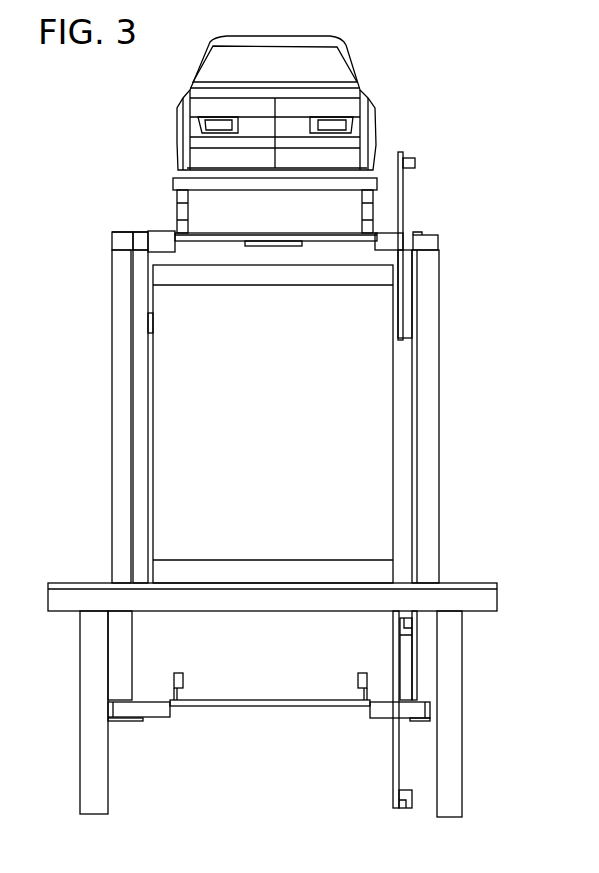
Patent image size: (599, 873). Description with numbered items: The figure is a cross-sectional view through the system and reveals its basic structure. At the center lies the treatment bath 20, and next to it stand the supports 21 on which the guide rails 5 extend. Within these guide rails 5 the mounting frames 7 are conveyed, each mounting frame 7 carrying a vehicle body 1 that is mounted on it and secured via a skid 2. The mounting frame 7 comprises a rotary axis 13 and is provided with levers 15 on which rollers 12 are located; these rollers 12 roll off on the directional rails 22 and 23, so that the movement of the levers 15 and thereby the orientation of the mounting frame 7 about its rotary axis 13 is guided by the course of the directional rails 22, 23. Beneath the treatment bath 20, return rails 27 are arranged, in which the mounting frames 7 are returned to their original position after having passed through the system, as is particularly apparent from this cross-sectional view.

The vehicle body 1 is at (358, 62).
The skid 2 is at (374, 192).
The guide rails 5 is at (114, 233).
The mounting frame 7 is at (203, 238).
The rollers 12 is at (413, 162).
The rotary axis 13 is at (163, 238).
The levers 15 is at (403, 210).
The treatment bath 20 is at (365, 385).
The supports 21 is at (114, 438).
The directional rail 22 is at (147, 342).
The directional rail 23 is at (408, 300).
The return rails 27 is at (128, 722).